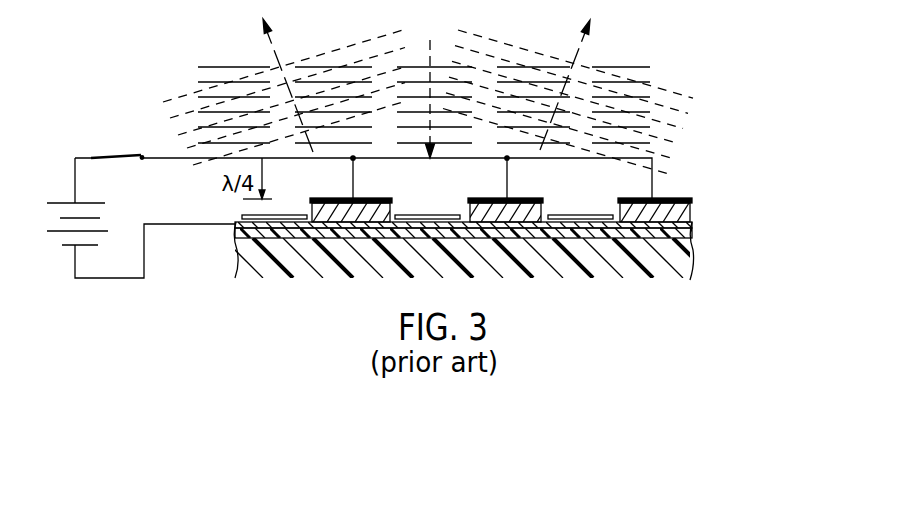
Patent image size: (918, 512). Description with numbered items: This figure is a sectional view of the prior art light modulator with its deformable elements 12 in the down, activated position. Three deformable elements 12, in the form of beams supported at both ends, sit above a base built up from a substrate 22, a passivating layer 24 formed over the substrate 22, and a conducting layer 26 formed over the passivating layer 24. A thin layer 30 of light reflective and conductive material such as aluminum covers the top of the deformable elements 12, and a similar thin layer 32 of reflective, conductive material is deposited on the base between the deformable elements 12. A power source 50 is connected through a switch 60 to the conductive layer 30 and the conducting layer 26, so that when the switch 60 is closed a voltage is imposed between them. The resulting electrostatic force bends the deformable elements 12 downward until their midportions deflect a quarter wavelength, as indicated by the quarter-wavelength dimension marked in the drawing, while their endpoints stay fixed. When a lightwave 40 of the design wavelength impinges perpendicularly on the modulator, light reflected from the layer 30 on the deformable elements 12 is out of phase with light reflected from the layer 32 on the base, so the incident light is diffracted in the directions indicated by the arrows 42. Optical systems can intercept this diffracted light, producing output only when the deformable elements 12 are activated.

The deformable elements 12 is at (691, 212).
The substrate 22 is at (690, 257).
The passivating layer 24 is at (692, 233).
The conducting layer 26 is at (692, 225).
The thin layer of light reflective and conductive material 30 is at (665, 196).
The thin layer of light reflective and conductive material 32 is at (556, 215).
The lightwave 40 is at (672, 84).
The arrows 42 is at (271, 44).
The power source 50 is at (61, 260).
The switch 60 is at (115, 155).